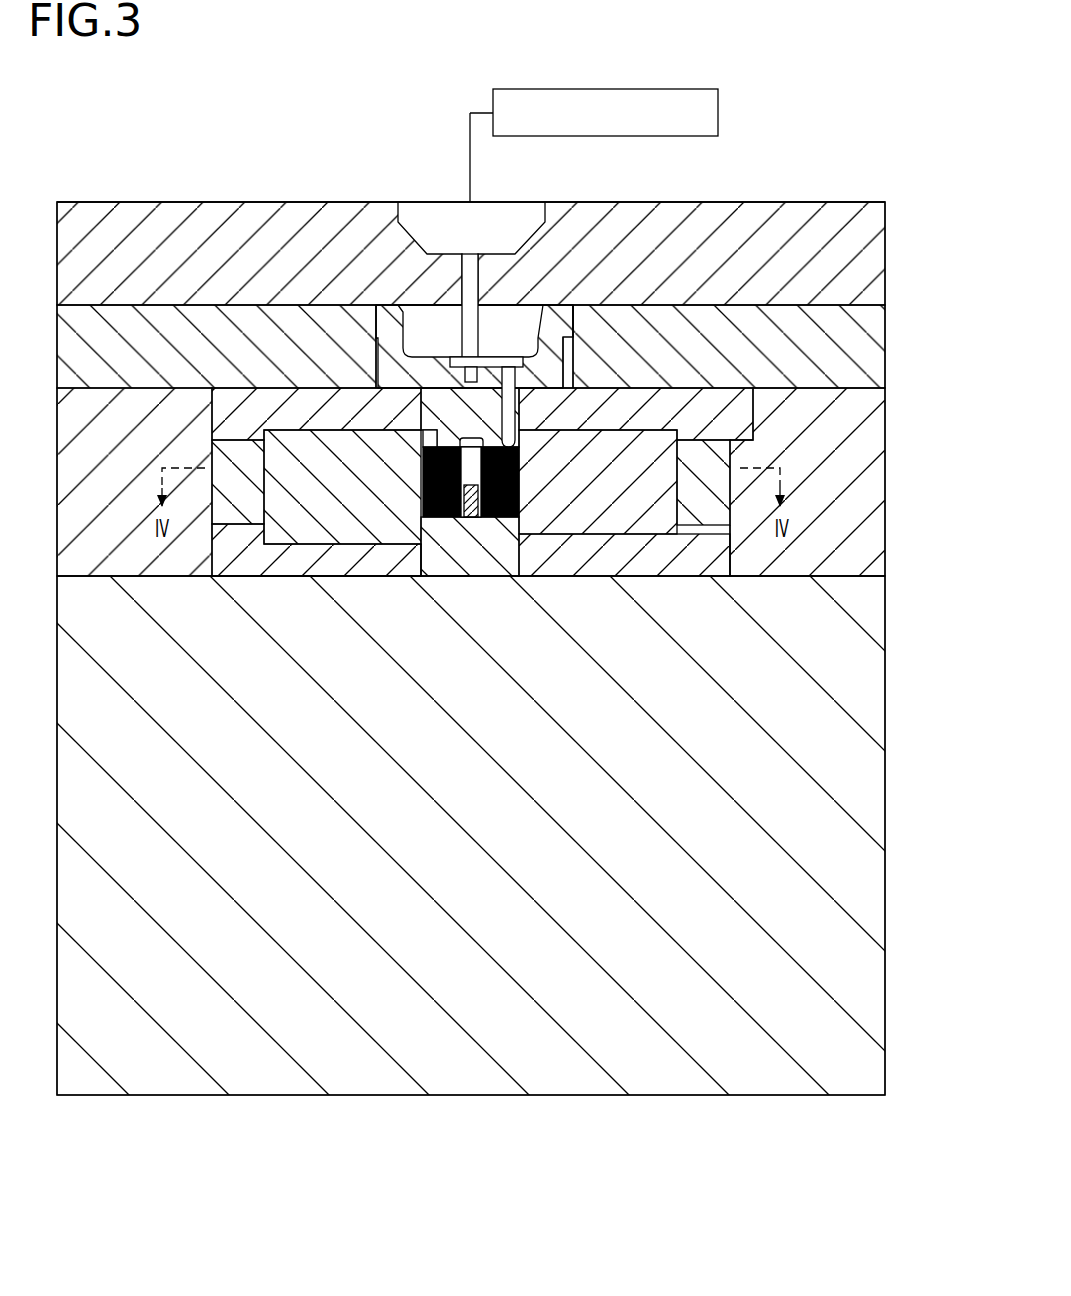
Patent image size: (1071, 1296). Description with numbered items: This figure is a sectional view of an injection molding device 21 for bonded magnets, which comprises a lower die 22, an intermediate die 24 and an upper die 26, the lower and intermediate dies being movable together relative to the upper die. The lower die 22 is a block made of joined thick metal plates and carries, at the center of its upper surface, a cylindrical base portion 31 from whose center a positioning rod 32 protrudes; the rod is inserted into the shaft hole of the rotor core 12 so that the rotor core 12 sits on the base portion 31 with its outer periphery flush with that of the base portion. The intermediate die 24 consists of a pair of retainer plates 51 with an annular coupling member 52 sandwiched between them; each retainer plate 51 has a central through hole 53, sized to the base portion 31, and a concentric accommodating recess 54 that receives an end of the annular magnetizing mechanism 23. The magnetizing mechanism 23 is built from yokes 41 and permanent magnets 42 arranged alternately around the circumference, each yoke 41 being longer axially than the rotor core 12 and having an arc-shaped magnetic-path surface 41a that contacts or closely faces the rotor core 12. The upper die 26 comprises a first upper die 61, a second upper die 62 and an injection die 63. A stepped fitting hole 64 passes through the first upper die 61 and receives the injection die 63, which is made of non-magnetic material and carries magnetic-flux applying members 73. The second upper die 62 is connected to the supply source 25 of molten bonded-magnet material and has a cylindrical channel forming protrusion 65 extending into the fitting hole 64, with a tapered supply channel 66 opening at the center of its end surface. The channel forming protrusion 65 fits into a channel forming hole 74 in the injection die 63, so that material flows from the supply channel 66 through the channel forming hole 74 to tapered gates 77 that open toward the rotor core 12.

The injection molding device 21 is at (846, 100).
The lower die 22 is at (886, 1097).
The magnetizing mechanism 23 is at (678, 528).
The intermediate die 24 is at (887, 578).
The supply source 25 is at (720, 112).
The upper die 26 is at (886, 202).
The base portion 31 is at (450, 578).
The positioning rod 32 is at (466, 520).
The yoke 41 is at (287, 538).
The magnetic-path surface 41a is at (421, 548).
The permanent magnet 42 is at (588, 530).
The retainer plate 51 is at (232, 395).
The coupling member 52 is at (712, 578).
The through hole 53 is at (440, 392).
The accommodating recess 54 is at (656, 435).
The first upper die 61 is at (887, 333).
The second upper die 62 is at (887, 259).
The injection die 63 is at (374, 302).
The fitting hole 64 is at (568, 320).
The channel forming protrusion 65 is at (540, 340).
The supply channel 66 is at (479, 321).
The magnetic-flux applying member 73 is at (421, 445).
The channel forming hole 74 is at (374, 318).
The gate 77 is at (516, 404).
The rotor core 12 is at (520, 497).